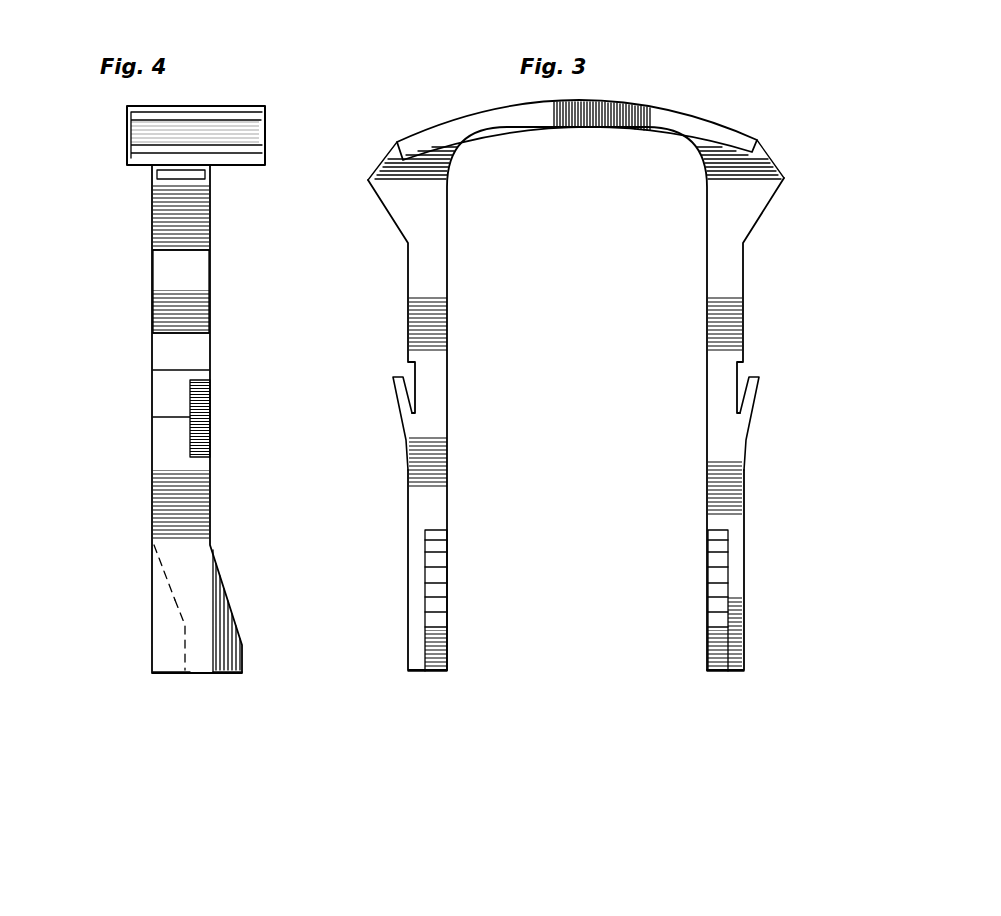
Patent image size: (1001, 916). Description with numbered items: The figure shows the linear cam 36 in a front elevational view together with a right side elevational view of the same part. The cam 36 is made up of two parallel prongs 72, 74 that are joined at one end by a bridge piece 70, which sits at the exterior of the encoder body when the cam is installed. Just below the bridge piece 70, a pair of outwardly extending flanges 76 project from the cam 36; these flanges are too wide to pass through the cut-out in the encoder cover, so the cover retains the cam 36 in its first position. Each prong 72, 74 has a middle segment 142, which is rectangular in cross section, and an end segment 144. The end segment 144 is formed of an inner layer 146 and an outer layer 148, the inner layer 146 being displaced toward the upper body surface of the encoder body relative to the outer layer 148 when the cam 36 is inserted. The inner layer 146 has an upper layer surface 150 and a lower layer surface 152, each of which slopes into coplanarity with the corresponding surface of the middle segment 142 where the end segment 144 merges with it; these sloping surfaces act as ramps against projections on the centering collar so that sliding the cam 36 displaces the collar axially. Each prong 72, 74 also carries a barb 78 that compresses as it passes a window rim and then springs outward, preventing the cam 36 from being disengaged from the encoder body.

In FIG. 4, the linear cam 36 is at (105, 283).
In FIG. 3, the linear cam 36 is at (783, 283).
In FIG. 4, the bridge piece 70 is at (153, 122).
In FIG. 3, the bridge piece 70 is at (694, 122).
In FIG. 4, the prong 72 is at (162, 437).
In FIG. 3, the prong 72 is at (430, 312).
In FIG. 3, the prong 74 is at (728, 338).
In FIG. 3, the outwardly extending flange 76 is at (400, 200).
In FIG. 4, the barb 78 is at (200, 430).
In FIG. 3, the barb 78 is at (398, 395).
In FIG. 4, the middle segment 142 is at (200, 342).
In FIG. 3, the middle segment 142 is at (707, 420).
In FIG. 4, the end segment 144 is at (190, 575).
In FIG. 3, the end segment 144 is at (708, 610).
In FIG. 4, the inner layer 146 is at (235, 665).
In FIG. 3, the inner layer 146 is at (446, 665).
In FIG. 4, the outer layer 148 is at (178, 660).
In FIG. 3, the outer layer 148 is at (418, 662).
In FIG. 4, the upper layer surface 150 is at (232, 597).
In FIG. 3, the upper layer surface 150 is at (712, 545).
In FIG. 4, the lower layer surface 152 is at (182, 621).